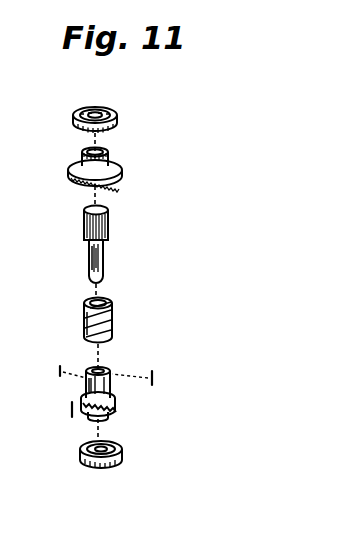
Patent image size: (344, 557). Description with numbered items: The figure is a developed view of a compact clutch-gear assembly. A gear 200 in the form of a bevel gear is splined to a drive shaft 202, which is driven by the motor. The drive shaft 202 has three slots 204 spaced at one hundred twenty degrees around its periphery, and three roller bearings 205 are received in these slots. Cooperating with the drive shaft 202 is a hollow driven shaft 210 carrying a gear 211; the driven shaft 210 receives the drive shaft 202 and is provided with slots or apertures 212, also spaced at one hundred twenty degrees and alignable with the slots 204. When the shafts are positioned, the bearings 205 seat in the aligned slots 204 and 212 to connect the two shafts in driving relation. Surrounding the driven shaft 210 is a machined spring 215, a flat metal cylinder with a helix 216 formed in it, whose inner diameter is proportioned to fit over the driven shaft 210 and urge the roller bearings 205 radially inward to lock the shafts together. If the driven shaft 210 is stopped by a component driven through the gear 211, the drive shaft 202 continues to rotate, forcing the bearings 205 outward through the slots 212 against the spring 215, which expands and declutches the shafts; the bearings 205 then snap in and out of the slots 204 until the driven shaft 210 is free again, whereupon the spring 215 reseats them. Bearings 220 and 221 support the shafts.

The bearing 220 is at (117, 117).
The gear 200 is at (121, 177).
The drive shaft 202 is at (103, 258).
The slots 204 is at (90, 261).
The machined spring 215 is at (113, 322).
The helix 216 is at (84, 318).
The driven shaft 210 is at (110, 380).
The slots or apertures 212 is at (86, 380).
The gear 211 is at (112, 402).
The roller bearings 205 is at (58, 369).
The bearing 221 is at (101, 470).